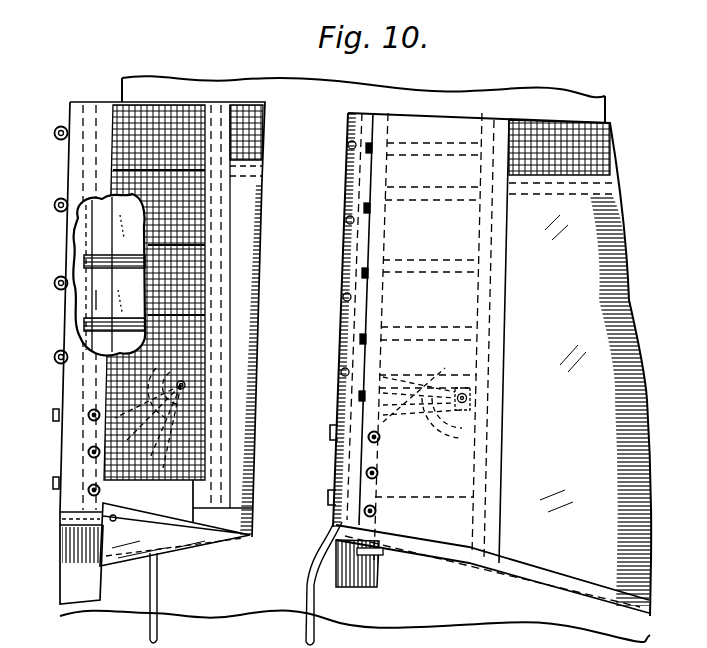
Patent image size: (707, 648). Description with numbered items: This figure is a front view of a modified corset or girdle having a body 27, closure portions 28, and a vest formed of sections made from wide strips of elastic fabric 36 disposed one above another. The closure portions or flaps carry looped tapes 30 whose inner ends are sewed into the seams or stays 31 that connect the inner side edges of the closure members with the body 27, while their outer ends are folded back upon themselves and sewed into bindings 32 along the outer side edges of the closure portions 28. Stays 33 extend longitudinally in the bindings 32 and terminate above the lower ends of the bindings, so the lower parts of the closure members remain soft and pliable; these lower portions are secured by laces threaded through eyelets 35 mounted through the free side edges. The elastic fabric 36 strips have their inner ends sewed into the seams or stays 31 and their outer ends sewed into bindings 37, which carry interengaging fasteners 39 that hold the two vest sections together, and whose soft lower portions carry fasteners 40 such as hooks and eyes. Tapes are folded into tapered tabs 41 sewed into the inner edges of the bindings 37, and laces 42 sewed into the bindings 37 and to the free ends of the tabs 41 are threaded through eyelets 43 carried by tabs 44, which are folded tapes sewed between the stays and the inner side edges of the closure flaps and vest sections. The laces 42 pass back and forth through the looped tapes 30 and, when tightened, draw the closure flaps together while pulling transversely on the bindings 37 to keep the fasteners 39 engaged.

The body 27 is at (584, 339).
The closure portions 28 is at (143, 493).
The looped tapes 30 is at (85, 262).
The seams or stays 31 is at (489, 314).
The bindings 32 is at (96, 300).
The stays 33 is at (57, 366).
The eyelets 35 is at (90, 420).
The elastic fabric 36 is at (172, 205).
The bindings 37 is at (343, 333).
The interengaging fasteners 39 is at (60, 203).
The fasteners 40 is at (53, 416).
The tapered tabs 41 is at (112, 462).
The laces 42 is at (299, 588).
The eyelets 43 is at (190, 389).
The tabs 44 is at (198, 376).